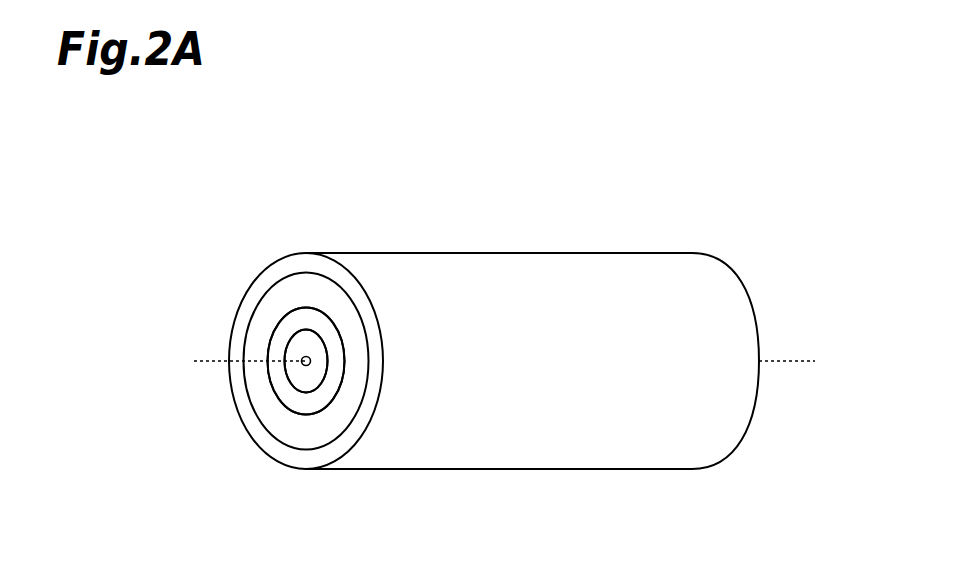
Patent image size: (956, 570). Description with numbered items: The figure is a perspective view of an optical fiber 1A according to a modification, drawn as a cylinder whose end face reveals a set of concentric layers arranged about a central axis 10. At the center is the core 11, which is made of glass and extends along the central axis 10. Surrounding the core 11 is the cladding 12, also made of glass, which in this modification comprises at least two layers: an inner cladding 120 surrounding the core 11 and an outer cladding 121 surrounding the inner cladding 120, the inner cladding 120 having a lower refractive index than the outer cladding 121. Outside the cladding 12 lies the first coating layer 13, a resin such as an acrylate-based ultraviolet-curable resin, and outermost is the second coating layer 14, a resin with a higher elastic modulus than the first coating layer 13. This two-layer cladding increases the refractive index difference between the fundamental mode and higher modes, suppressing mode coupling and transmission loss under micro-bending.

The optical fiber 1A is at (238, 253).
The central axis 10 is at (210, 361).
The core 11 is at (300, 367).
The cladding 12 is at (132, 413).
The inner cladding 120 is at (305, 378).
The outer cladding 121 is at (302, 402).
The first coating layer 13 is at (277, 427).
The second coating layer 14 is at (283, 466).